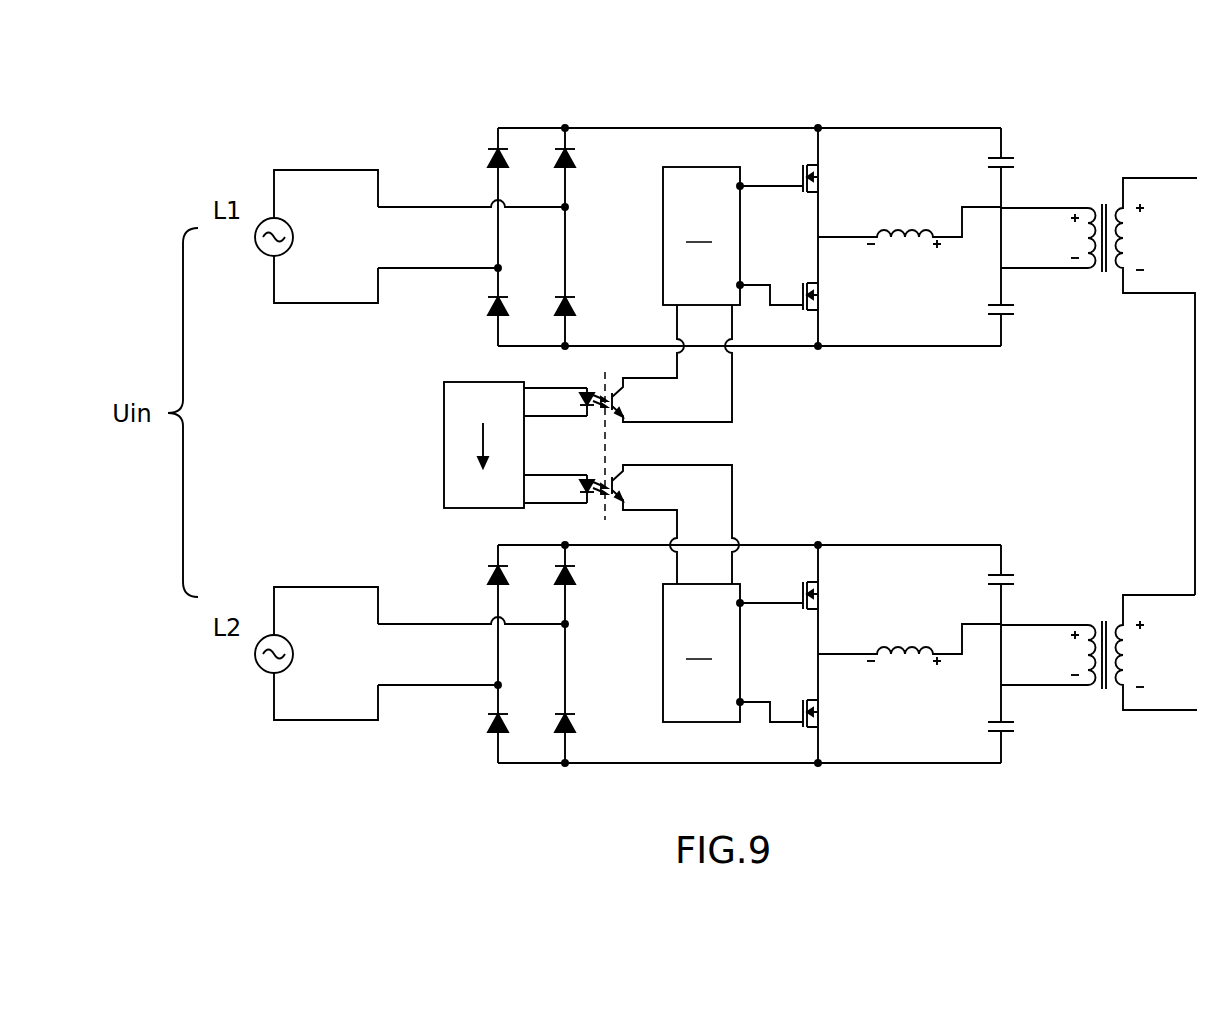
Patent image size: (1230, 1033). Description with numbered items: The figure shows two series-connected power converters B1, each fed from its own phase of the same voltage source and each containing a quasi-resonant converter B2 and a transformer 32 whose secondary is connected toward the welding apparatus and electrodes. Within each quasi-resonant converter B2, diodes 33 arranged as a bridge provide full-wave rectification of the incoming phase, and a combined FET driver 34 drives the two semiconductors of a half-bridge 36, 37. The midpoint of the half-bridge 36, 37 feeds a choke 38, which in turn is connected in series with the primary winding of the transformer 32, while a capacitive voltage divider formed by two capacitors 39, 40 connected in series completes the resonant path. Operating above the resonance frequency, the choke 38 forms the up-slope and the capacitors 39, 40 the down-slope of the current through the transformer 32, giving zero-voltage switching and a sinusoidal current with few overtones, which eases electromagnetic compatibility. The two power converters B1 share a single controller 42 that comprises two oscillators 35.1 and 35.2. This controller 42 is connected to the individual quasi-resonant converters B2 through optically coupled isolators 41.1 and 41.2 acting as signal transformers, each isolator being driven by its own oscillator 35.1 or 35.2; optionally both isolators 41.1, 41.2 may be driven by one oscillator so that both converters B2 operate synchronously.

The transformer 32 is at (1093, 209).
The diodes 33 is at (492, 157).
The FET driver 34 is at (733, 444).
The oscillator 35.1 is at (463, 417).
The oscillator 35.2 is at (463, 505).
The half-bridge semiconductor 36 is at (820, 177).
The half-bridge semiconductor 37 is at (820, 297).
The choke 38 is at (903, 230).
The capacitor 39 is at (1009, 156).
The capacitor 40 is at (1010, 316).
The optically coupled isolator 41.1 is at (602, 390).
The optically coupled isolator 41.2 is at (603, 500).
The controller 42 is at (443, 436).
The power converter B1 is at (560, 110).
The quasi-resonant converter B2 is at (938, 128).